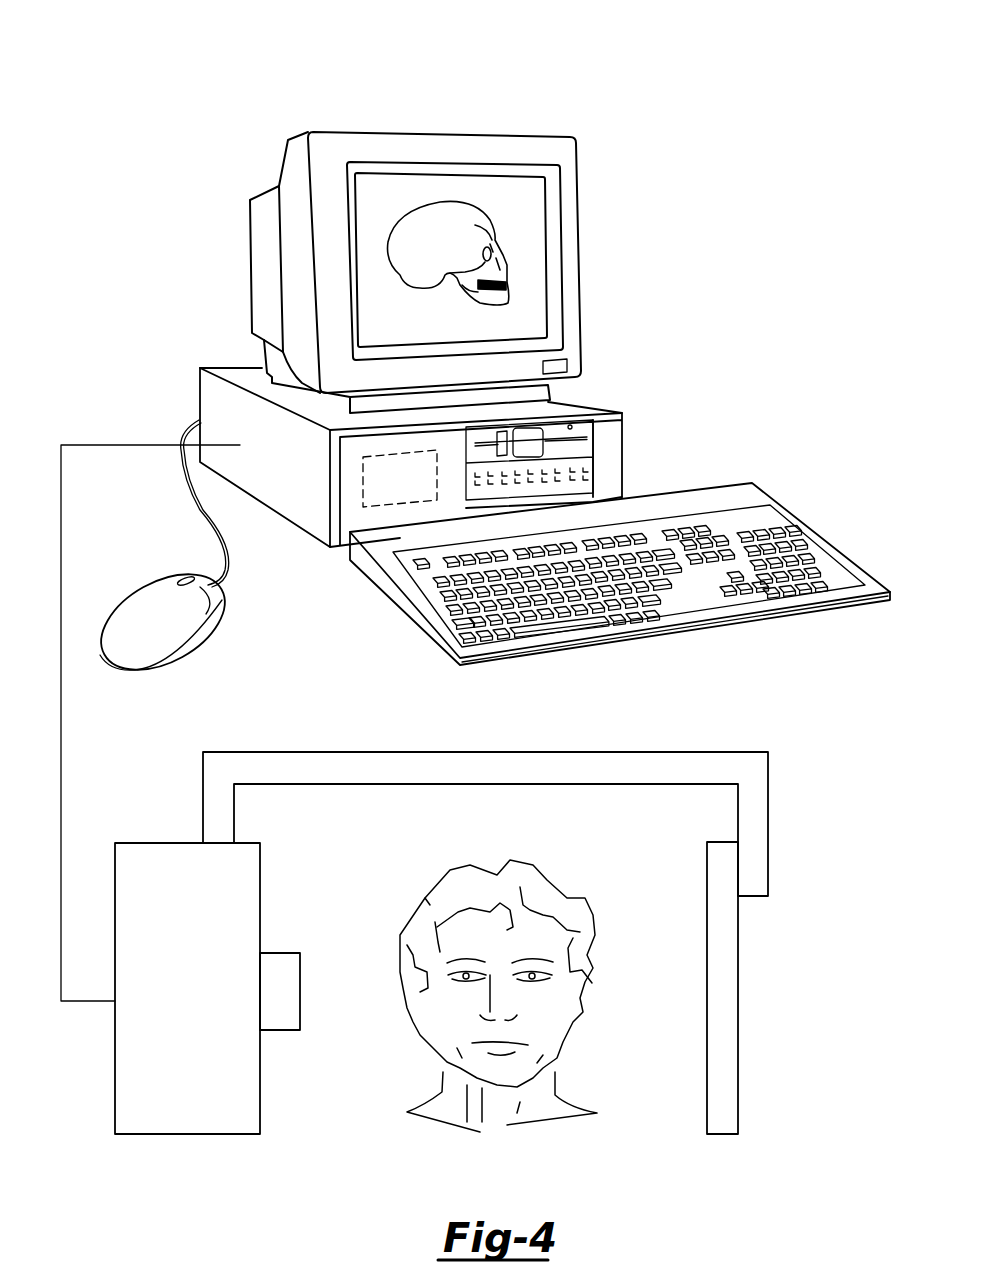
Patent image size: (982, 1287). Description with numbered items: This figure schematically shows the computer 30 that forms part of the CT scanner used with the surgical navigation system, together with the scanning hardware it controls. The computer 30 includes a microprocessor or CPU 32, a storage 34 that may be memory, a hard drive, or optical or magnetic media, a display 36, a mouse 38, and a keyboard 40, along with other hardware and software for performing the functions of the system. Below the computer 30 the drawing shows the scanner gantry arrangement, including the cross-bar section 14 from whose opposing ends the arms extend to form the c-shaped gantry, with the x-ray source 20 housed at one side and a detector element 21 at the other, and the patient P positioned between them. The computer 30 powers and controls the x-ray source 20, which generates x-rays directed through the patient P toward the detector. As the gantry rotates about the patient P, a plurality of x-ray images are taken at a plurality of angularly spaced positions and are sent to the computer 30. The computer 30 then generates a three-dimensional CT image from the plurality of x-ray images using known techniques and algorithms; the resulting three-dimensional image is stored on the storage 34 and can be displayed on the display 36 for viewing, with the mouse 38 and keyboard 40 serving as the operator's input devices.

The computer 30 is at (557, 93).
The microprocessor or CPU 32 is at (623, 443).
The storage 34 is at (380, 482).
The display 36 is at (585, 290).
The mouse 38 is at (137, 600).
The keyboard 40 is at (760, 493).
The cross-bar section 14 is at (332, 751).
The x-ray source 20 is at (200, 991).
The detector 21 is at (738, 1013).
The patient P is at (500, 1118).